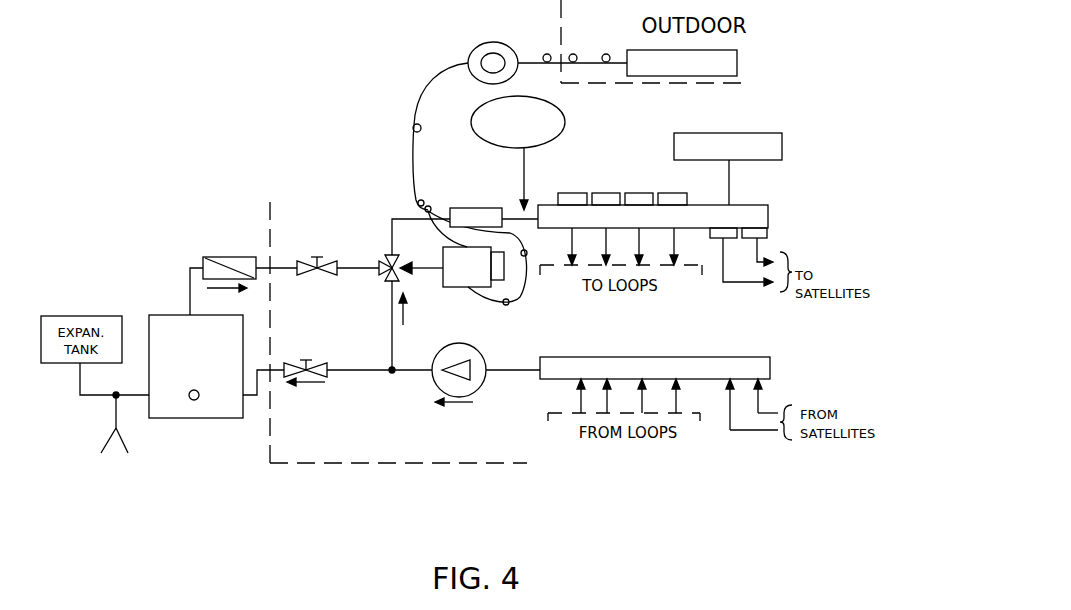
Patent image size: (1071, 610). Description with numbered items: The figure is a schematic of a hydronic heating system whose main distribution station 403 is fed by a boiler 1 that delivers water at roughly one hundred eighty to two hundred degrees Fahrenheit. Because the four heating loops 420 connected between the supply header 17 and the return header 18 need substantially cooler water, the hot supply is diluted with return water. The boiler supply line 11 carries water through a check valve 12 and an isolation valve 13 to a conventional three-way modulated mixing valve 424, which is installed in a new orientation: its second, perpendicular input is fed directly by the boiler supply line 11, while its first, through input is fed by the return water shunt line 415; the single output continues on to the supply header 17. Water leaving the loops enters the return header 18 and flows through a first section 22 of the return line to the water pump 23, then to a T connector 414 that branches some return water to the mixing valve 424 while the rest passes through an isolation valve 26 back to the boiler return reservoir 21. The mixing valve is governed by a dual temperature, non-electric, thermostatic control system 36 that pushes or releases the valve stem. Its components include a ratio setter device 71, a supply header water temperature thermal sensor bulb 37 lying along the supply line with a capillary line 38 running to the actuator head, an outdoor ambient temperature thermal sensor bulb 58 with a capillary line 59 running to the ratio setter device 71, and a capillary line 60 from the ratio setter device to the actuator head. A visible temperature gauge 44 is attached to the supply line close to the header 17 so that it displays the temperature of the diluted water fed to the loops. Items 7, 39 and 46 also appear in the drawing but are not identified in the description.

The boiler 1 is at (194, 418).
The boiler fill 7 is at (115, 427).
The boiler supply line 11 is at (190, 262).
The check valve 12 is at (212, 257).
The isolation valve 13 is at (317, 252).
The supply header 17 is at (750, 202).
The return header 18 is at (597, 357).
The boiler return reservoir 21 is at (197, 390).
The first section 22 is at (492, 373).
The water pump 23 is at (460, 343).
The isolation valve 26 is at (308, 358).
The control system 36 is at (437, 33).
The supply header water temperature thermal sensor bulb 37 is at (468, 208).
The capillary line 38 is at (437, 205).
The heat exchanger 39 is at (498, 305).
The temperature gauge 44 is at (565, 120).
The air vent 46 is at (729, 133).
The outdoor ambient temperature thermal sensor bulb 58 is at (737, 70).
The capillary line 59 is at (573, 53).
The capillary line 60 is at (417, 105).
The ratio setter device 71 is at (492, 42).
The distribution station 403 is at (268, 204).
The T connector 414 is at (390, 373).
The return water shunt line 415 is at (393, 348).
The heating loops 420 is at (643, 305).
The three-way modulated mixing valve 424 is at (377, 290).